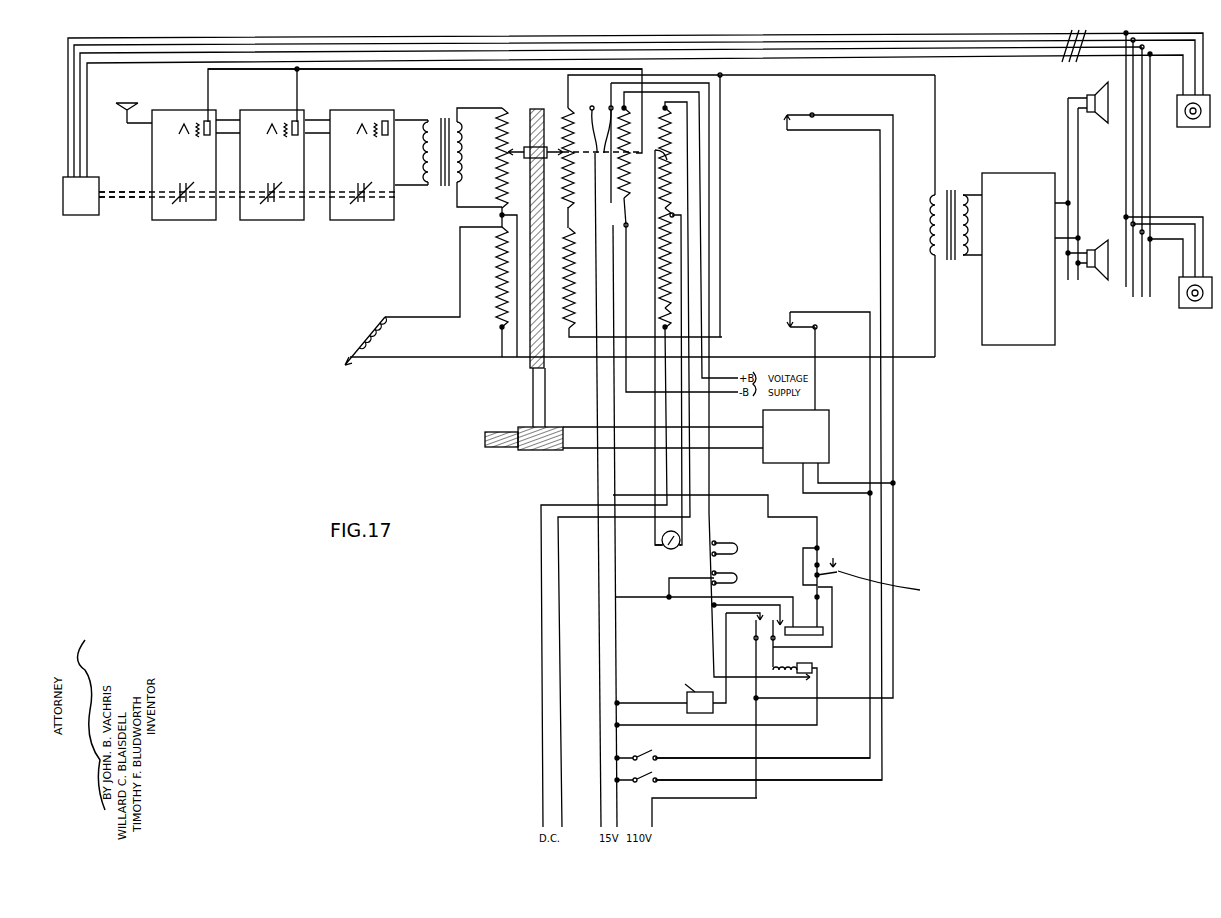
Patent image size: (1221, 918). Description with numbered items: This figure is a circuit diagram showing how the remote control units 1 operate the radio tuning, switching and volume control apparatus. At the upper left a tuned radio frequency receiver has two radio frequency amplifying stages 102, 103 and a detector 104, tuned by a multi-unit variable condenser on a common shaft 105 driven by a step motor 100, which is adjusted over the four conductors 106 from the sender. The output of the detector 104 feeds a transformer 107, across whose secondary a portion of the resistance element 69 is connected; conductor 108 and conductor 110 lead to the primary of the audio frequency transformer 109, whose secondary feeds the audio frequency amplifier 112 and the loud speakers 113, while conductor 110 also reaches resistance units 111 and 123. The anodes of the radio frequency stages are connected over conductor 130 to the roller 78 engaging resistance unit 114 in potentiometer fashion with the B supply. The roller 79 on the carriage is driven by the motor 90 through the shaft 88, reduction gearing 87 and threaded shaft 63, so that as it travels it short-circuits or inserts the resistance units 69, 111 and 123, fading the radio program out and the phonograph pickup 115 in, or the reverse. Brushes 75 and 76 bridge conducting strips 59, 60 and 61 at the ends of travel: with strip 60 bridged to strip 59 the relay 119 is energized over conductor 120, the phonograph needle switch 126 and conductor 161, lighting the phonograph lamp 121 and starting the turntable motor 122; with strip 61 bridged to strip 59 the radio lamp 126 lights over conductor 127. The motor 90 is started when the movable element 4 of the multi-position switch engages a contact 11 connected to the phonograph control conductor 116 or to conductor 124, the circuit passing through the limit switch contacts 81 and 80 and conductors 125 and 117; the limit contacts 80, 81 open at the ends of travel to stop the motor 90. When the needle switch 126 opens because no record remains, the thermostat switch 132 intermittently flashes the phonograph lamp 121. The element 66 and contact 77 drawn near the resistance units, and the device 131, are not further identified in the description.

The outlet box 1 is at (1177, 108).
The movable element of the multi-position switch 4 is at (638, 755).
The contact spring 11 is at (657, 754).
The conducting strip 59 is at (595, 208).
The conducting strip 60 is at (612, 270).
The conducting strip 61 is at (610, 180).
The threaded shaft 63 is at (531, 380).
The resistor 66 is at (672, 138).
The resistance element 69 is at (497, 148).
The contact spring 75 is at (590, 112).
The brush 76 is at (609, 112).
The contact arm 77 is at (658, 155).
The roller 78 is at (636, 158).
The roller 79 is at (516, 146).
The limit switch contact 80 is at (784, 120).
The limit switch contact 81 is at (787, 136).
The reduction gearing 87 is at (495, 449).
The shaft 88 is at (566, 432).
The switching motor 90 is at (796, 395).
The step motor 100 is at (83, 216).
The radio frequency amplifying stage 102 is at (190, 221).
The radio frequency amplifying stage 103 is at (278, 221).
The detector 104 is at (369, 221).
The common shaft 105 is at (132, 199).
The conductors 106 is at (1068, 55).
The transformer 107 is at (442, 186).
The conductor 108 is at (921, 357).
The audio frequency transformer 109 is at (955, 183).
The conductor 110 is at (936, 126).
The resistance unit 111 is at (563, 120).
The audio frequency amplifier 112 is at (1035, 175).
The loud speakers 113 is at (1102, 90).
The resistance unit 114 is at (627, 200).
The pickup 115 is at (370, 322).
The phonograph control conductor 116 is at (868, 514).
The conductor 117 is at (894, 553).
The relay 119 is at (822, 636).
The conductor 120 is at (614, 645).
The phonograph lamp 121 is at (719, 580).
The turntable motor 122 is at (713, 712).
The resistance unit 123 is at (562, 248).
The conductor 124 is at (816, 780).
The conductor 125 is at (895, 520).
The phonograph needle switch 126 is at (719, 550).
The conductor 127 is at (712, 528).
The conductor 130 is at (465, 70).
The switch 131 is at (668, 550).
The thermostat switch 132 is at (812, 665).
The conductor 161 is at (590, 601).